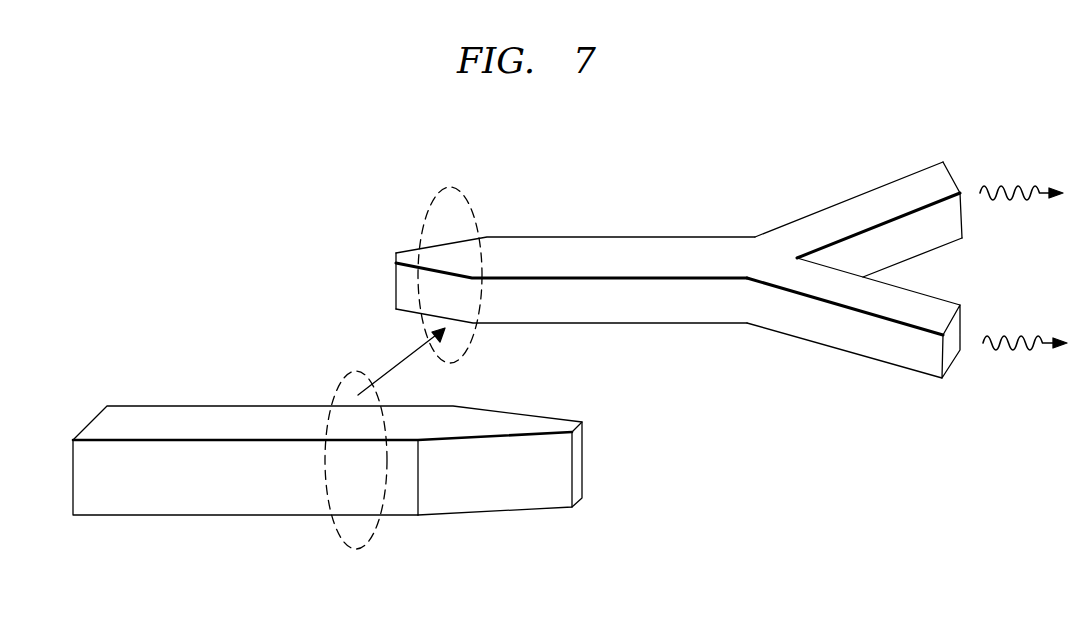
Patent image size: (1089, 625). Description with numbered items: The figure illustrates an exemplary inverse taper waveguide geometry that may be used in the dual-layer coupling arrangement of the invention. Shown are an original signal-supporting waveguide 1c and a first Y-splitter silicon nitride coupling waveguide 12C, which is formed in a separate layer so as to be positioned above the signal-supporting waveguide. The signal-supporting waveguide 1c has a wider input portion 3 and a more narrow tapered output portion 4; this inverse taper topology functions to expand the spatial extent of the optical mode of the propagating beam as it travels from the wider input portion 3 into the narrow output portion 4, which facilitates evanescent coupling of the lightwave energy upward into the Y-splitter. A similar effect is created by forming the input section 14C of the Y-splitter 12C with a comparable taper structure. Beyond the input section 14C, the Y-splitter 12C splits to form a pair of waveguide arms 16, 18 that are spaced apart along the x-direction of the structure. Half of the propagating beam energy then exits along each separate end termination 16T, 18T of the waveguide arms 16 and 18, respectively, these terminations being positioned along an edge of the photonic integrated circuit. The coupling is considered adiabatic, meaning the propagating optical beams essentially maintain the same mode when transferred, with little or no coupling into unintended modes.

The first Y-splitter silicon nitride coupling waveguide 12C is at (582, 213).
The input section of Y-splitter 14C is at (412, 257).
The waveguide arm 16 is at (850, 293).
The end termination of waveguide arm 16T is at (957, 347).
The waveguide arm 18 is at (867, 207).
The end termination of waveguide arm 18T is at (955, 178).
The wider input portion of waveguide 3 is at (160, 415).
The narrow tapered output portion 4 is at (527, 425).
The original signal-supporting waveguide 1c is at (227, 493).